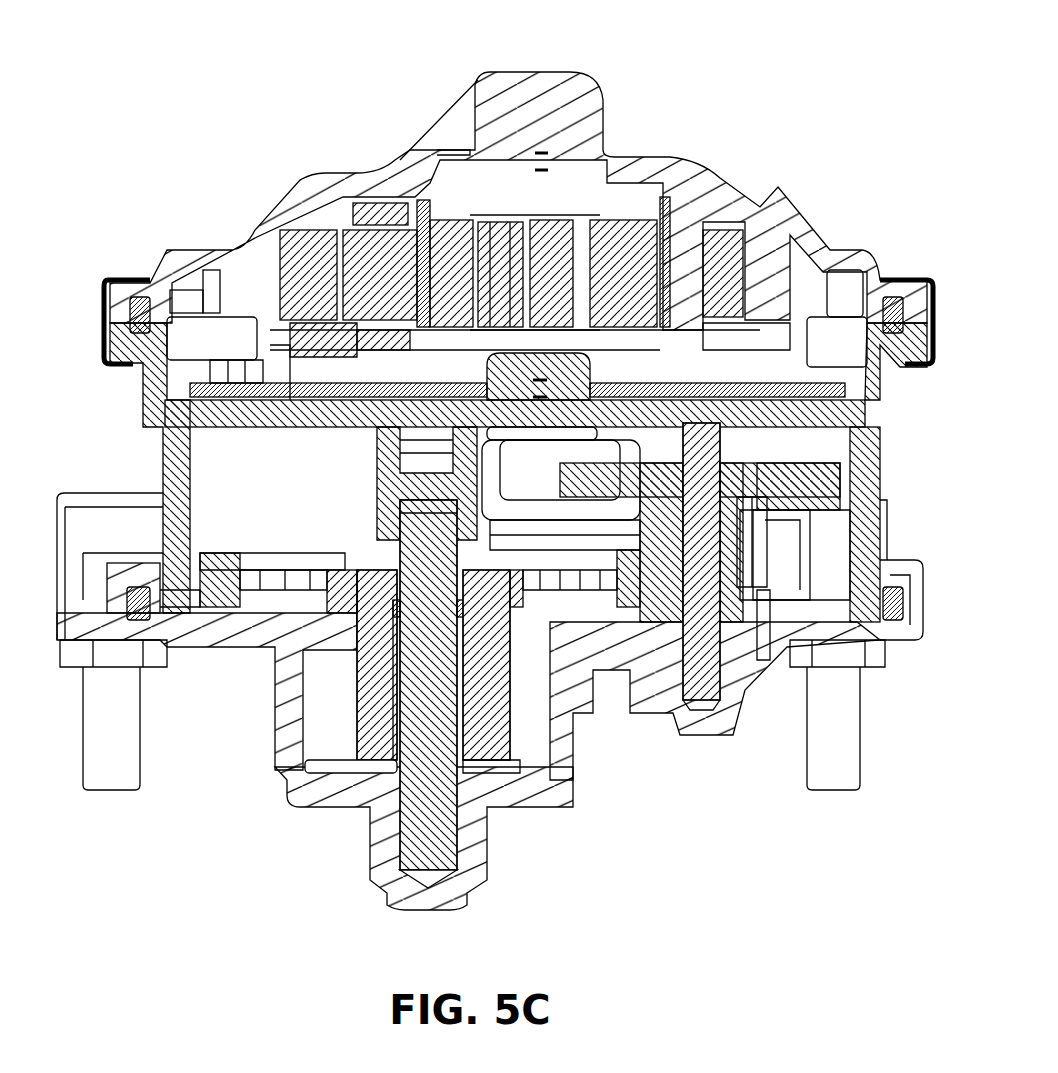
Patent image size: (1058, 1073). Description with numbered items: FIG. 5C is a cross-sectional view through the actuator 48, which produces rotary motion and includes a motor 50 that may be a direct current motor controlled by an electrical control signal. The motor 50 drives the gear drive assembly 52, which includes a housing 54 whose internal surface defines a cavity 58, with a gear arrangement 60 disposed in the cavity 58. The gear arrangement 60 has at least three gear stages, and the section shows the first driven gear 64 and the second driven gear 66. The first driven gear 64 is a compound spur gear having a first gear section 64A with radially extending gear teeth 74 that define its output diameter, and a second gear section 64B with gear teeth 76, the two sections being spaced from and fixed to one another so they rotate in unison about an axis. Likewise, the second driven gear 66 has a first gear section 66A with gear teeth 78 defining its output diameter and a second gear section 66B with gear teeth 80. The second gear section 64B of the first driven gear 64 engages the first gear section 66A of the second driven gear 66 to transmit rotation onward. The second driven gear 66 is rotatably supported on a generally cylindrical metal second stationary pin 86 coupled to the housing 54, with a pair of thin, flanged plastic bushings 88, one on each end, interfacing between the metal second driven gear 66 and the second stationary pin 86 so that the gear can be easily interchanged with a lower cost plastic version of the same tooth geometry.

The actuator 48 is at (750, 120).
The motor 50 is at (450, 218).
The gear drive assembly 52 is at (822, 208).
The housing 54 is at (865, 530).
The cavity 58 is at (837, 553).
The gear arrangement 60 is at (510, 723).
The first driven gear 64 is at (832, 452).
The first gear section of the first driven gear 64A is at (842, 470).
The second gear section of the first driven gear 64B is at (790, 595).
The second driven gear 66 is at (218, 616).
The first gear section of the second driven gear 66A is at (217, 555).
The second gear section of the second driven gear 66B is at (383, 770).
The gear teeth 74 is at (562, 486).
The gear teeth 76 is at (762, 595).
The gear teeth 78 is at (203, 573).
The gear teeth 80 is at (345, 680).
The second stationary pin 86 is at (440, 853).
The plastic bushings 88 is at (377, 745).